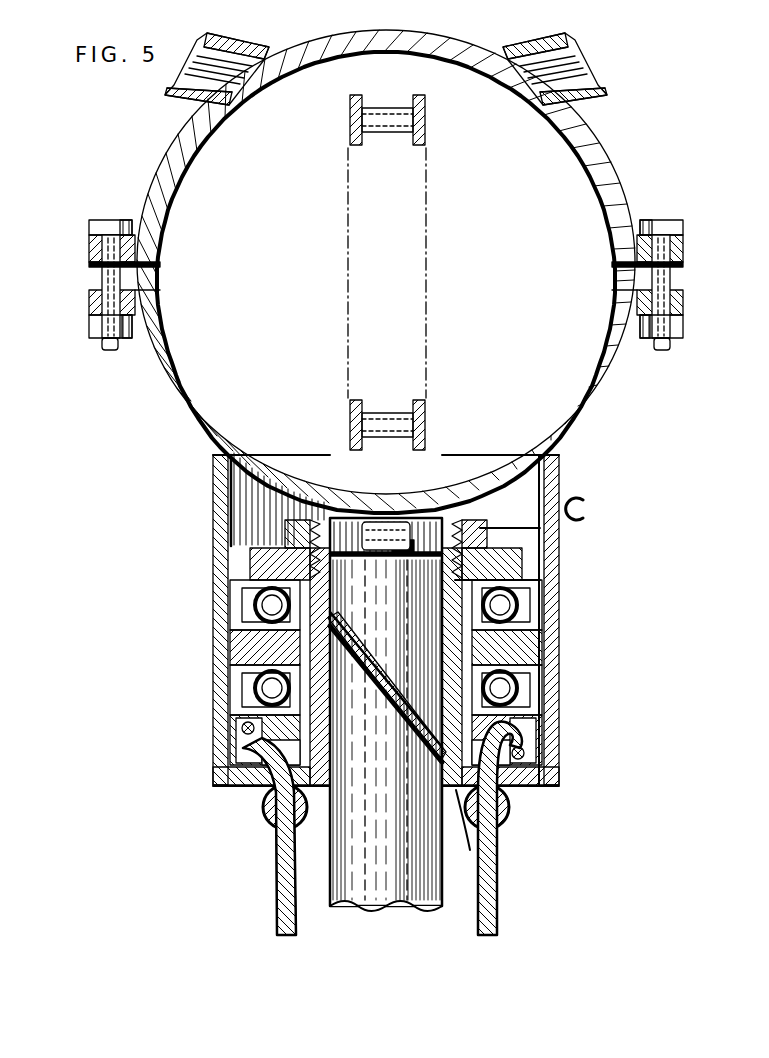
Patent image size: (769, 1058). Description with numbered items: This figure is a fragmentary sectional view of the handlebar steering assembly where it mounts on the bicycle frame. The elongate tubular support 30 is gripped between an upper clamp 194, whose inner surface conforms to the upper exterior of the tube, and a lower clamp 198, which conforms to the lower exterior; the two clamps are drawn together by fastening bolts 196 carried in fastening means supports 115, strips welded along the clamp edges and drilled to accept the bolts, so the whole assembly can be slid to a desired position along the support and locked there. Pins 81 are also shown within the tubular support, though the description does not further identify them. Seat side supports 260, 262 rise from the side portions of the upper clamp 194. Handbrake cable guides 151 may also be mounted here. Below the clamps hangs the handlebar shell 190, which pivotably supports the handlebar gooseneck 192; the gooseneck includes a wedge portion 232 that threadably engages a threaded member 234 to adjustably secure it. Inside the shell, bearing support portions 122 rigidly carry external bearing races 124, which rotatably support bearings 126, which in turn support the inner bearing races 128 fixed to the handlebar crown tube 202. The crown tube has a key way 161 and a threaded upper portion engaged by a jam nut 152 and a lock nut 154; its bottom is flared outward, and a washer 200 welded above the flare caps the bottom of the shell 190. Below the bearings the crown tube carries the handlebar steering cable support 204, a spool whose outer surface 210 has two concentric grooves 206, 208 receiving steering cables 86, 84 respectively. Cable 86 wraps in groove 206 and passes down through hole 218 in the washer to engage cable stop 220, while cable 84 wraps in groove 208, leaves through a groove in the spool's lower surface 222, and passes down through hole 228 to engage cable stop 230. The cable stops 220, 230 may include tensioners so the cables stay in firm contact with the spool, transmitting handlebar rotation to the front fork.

The elongate tubular support 30 is at (180, 178).
The pin 81 is at (426, 122).
The steering cable 84 is at (525, 754).
The steering cable 86 is at (245, 726).
The fastening means supports 115 is at (92, 266).
The bearing support portion 122 is at (535, 650).
The external bearing races 124 is at (535, 672).
The bearings 126 is at (518, 603).
The inner bearing races 128 is at (540, 590).
The handbrake cable guides 151 is at (590, 510).
The jam nut 152 is at (507, 565).
The lock nut 154 is at (497, 540).
The key way 161 is at (358, 500).
The handlebar shell 190 is at (218, 490).
The handlebar gooseneck 192 is at (445, 905).
The upper clamp 194 is at (165, 150).
The fastening bolts 196 is at (92, 220).
The lower clamp 198 is at (158, 358).
The washer 200 is at (216, 785).
The handlebar crown tube 202 is at (528, 630).
The handlebar steering cable support 204 is at (240, 668).
The groove 206 is at (237, 690).
The groove 208 is at (548, 777).
The outer surface 210 is at (238, 752).
The hole 218 is at (335, 795).
The cable stop 220 is at (263, 806).
The lower surface 222 is at (515, 795).
The hole 228 is at (505, 822).
The cable stop 230 is at (512, 845).
The wedge portion 232 is at (298, 545).
The threaded member 234 is at (250, 612).
The seat side support 260 is at (592, 62).
The seat side support 262 is at (178, 92).